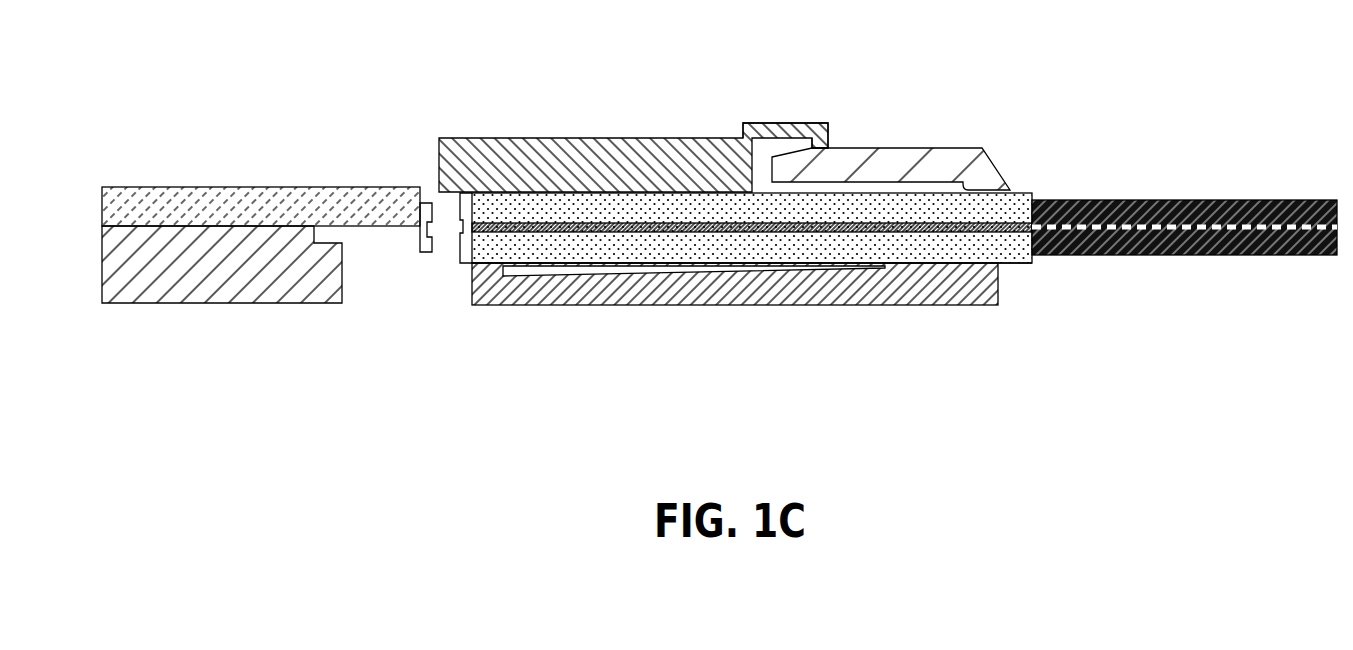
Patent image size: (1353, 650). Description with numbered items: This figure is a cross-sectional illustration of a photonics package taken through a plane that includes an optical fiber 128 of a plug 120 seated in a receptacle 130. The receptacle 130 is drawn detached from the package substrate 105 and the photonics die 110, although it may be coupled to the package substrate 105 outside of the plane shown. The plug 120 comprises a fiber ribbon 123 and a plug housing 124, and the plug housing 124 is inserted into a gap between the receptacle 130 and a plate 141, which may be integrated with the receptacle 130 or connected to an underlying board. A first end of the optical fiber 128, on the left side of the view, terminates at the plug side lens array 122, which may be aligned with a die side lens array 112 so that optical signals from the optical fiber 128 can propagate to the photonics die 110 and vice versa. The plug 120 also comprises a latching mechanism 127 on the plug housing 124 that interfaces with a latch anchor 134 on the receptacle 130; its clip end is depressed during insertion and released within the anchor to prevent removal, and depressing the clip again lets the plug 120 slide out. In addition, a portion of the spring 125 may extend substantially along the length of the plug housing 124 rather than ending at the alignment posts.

The package substrate 105 is at (173, 290).
The photonics die 110 is at (176, 200).
The die side lens array 112 is at (410, 246).
The plug 120 is at (1034, 324).
The plug side lens array 122 is at (460, 260).
The fiber ribbon 123 is at (1125, 257).
The plug housing 124 is at (938, 252).
The spring 125 is at (735, 266).
The latching mechanism 127 is at (915, 160).
The optical fiber 128 is at (993, 220).
The receptacle 130 is at (492, 143).
The latch anchor 134 is at (773, 122).
The plate 141 is at (617, 305).